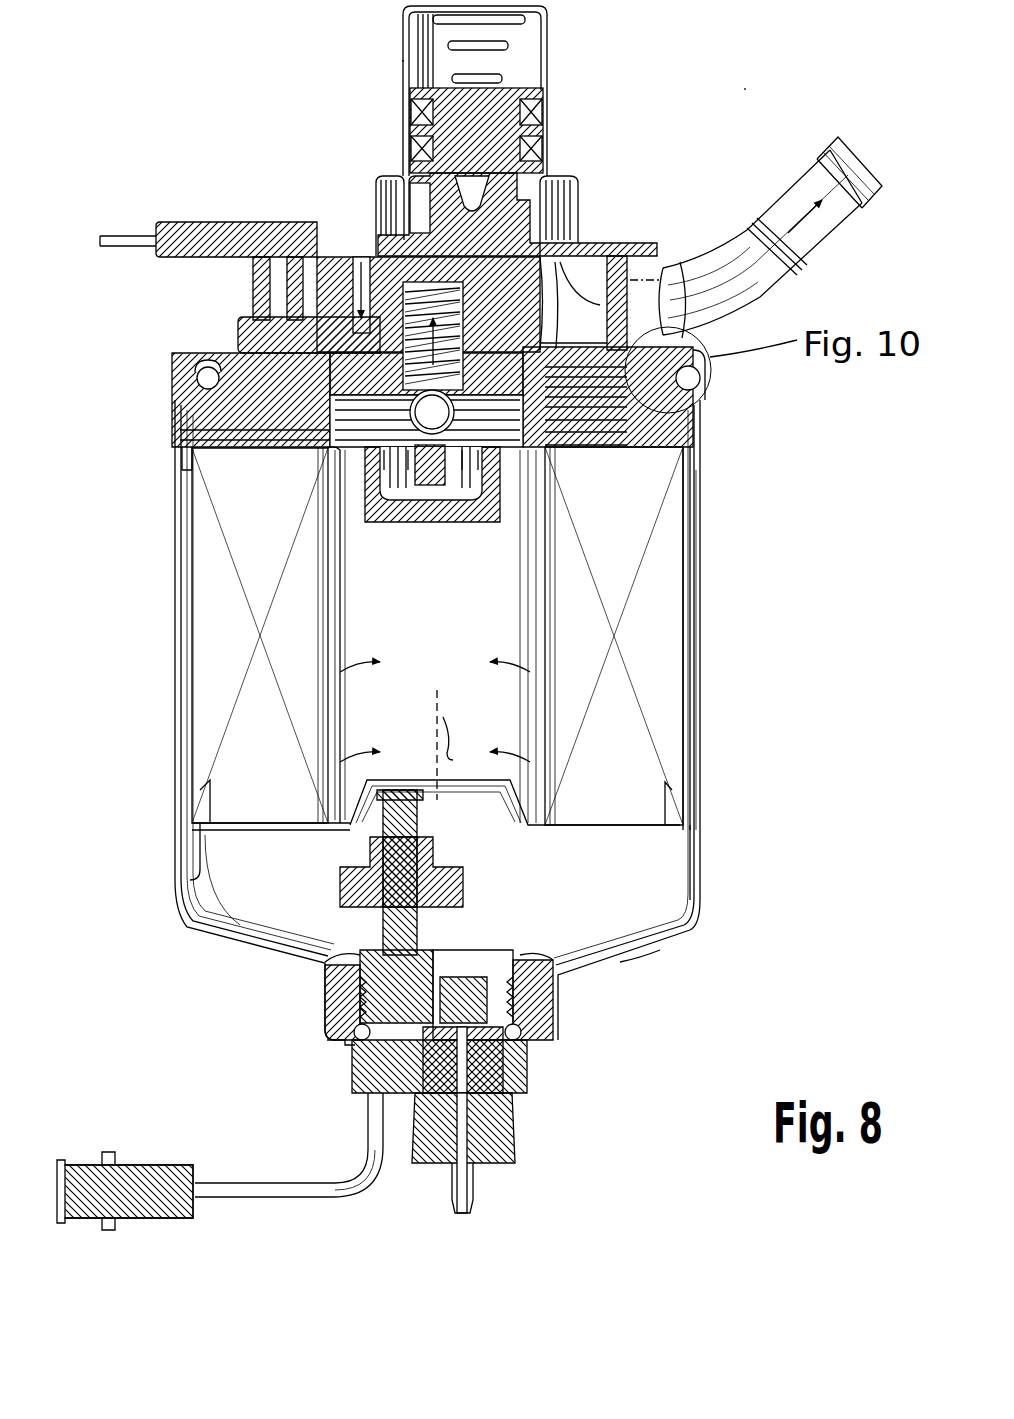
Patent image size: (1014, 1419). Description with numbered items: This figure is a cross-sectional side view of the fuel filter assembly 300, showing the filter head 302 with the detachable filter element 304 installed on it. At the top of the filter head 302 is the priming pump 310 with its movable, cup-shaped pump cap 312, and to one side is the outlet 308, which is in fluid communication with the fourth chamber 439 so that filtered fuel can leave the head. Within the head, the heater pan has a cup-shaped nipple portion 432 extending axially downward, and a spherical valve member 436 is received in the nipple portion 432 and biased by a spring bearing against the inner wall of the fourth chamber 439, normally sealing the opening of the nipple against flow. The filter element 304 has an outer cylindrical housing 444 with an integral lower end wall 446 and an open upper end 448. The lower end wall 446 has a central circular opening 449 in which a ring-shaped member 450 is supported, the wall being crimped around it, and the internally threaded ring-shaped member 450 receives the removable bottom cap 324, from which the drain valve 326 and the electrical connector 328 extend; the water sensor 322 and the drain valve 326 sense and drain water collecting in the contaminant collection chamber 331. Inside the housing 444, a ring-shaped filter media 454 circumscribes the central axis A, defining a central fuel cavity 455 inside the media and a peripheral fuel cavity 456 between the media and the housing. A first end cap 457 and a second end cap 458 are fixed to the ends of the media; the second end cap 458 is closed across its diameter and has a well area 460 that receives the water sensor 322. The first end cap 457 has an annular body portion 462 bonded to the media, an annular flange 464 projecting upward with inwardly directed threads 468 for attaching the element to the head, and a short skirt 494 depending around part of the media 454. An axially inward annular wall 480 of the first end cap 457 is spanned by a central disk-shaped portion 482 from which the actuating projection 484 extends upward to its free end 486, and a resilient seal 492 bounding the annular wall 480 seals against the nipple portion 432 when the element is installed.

The fuel filter assembly 300 is at (750, 84).
The filter head 302 is at (650, 243).
The filter element 304 is at (697, 633).
The outlet 308 is at (815, 235).
The priming pump 310 is at (320, 58).
The pump cap 312 is at (548, 33).
The water sensor 322 is at (575, 950).
The bottom cap 324 is at (530, 1070).
The drain valve 326 is at (520, 1157).
The electrical connector 328 is at (163, 1213).
The contaminant collection chamber 331 is at (610, 904).
The nipple portion 432 is at (393, 522).
The spherical valve member 436 is at (453, 417).
The fourth chamber 439 is at (413, 337).
The housing 444 is at (703, 827).
The lower end wall 446 is at (673, 933).
The open upper end 448 is at (697, 413).
The central circular opening 449 is at (332, 1040).
The ring-shaped member 450 is at (533, 1003).
The filter media 454 is at (660, 577).
The central fuel cavity 455 is at (494, 711).
The peripheral fuel cavity 456 is at (700, 720).
The first end cap 457 is at (176, 452).
The second end cap 458 is at (237, 828).
The well area 460 is at (473, 810).
The annular body portion 462 is at (228, 458).
The annular flange 464 is at (178, 402).
The threads 468 is at (180, 432).
The annular wall 480 is at (368, 486).
The central portion 482 is at (437, 523).
The actuating projection 484 is at (413, 520).
The free end 486 is at (427, 522).
The resilient seal 492 is at (470, 522).
The skirt 494 is at (690, 470).
The central axis A is at (467, 745).